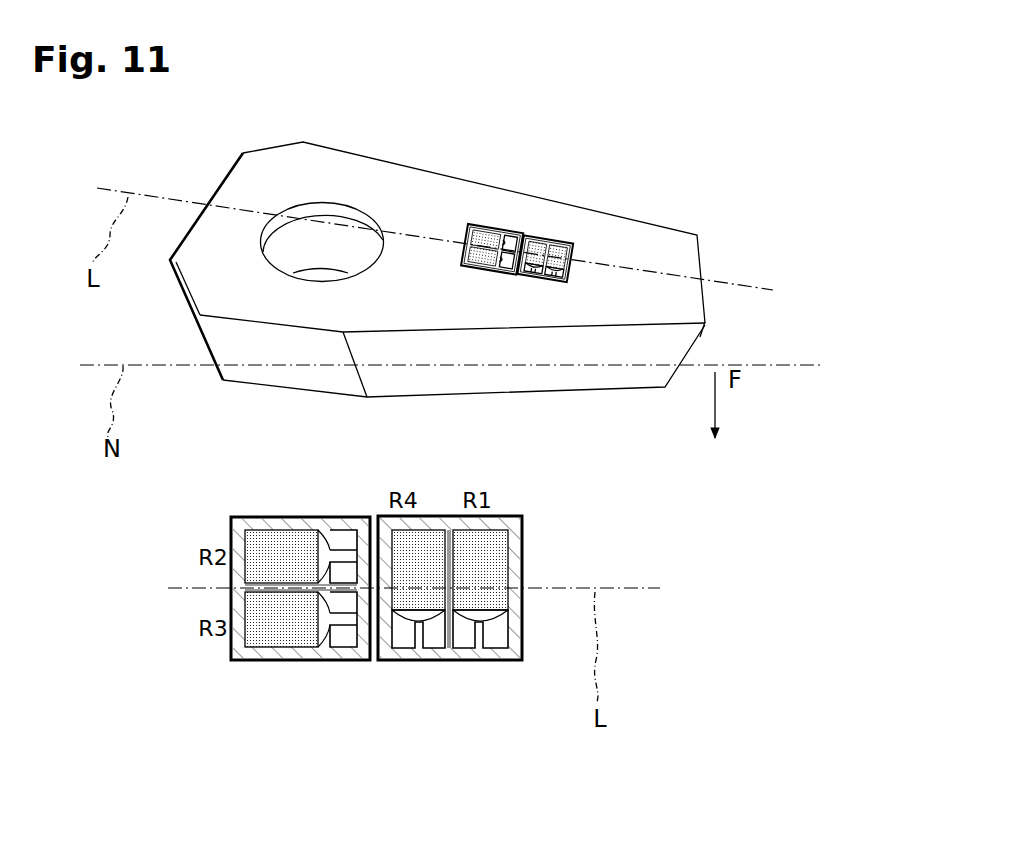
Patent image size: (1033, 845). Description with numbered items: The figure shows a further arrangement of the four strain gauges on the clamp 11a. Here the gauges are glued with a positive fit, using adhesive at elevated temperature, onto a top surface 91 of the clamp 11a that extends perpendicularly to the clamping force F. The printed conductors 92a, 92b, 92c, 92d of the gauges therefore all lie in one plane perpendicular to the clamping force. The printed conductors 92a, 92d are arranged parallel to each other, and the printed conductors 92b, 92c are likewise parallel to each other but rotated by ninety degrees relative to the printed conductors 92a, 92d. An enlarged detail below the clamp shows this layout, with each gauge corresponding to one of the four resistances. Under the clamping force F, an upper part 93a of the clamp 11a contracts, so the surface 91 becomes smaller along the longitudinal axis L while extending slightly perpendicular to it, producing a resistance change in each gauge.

The clamp 11a is at (708, 186).
The top surface 91 is at (382, 198).
The upper part 93a is at (249, 330).
The printed conductor 92a is at (502, 538).
The printed conductor 92b is at (260, 550).
The printed conductor 92c is at (260, 630).
The printed conductor 92d is at (435, 540).